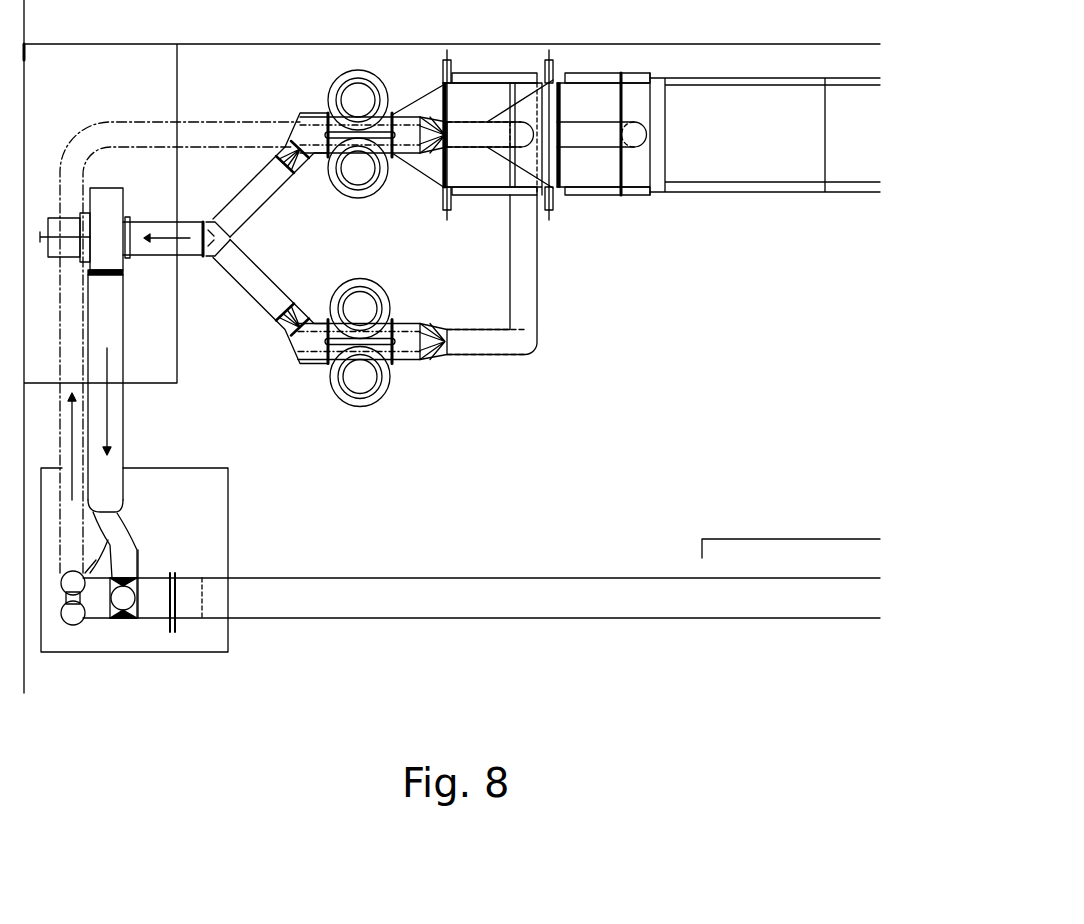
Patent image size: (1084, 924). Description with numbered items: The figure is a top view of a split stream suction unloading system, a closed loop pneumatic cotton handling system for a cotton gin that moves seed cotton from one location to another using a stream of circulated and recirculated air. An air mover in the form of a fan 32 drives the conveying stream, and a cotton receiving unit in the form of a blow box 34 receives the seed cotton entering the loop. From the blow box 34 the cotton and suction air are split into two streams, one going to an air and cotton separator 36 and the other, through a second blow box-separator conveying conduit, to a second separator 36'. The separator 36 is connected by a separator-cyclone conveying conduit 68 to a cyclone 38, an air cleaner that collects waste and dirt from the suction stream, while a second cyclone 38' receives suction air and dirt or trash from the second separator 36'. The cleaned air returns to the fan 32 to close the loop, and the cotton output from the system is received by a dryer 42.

The fan 32 is at (107, 203).
The blow box 34 is at (145, 587).
The separator 36 is at (472, 146).
The second separator 36' is at (603, 160).
The cyclone 38 is at (372, 329).
The second cyclone 38' is at (373, 151).
The dryer 42 is at (698, 162).
The separator-cyclone conveying conduit 68 is at (527, 302).